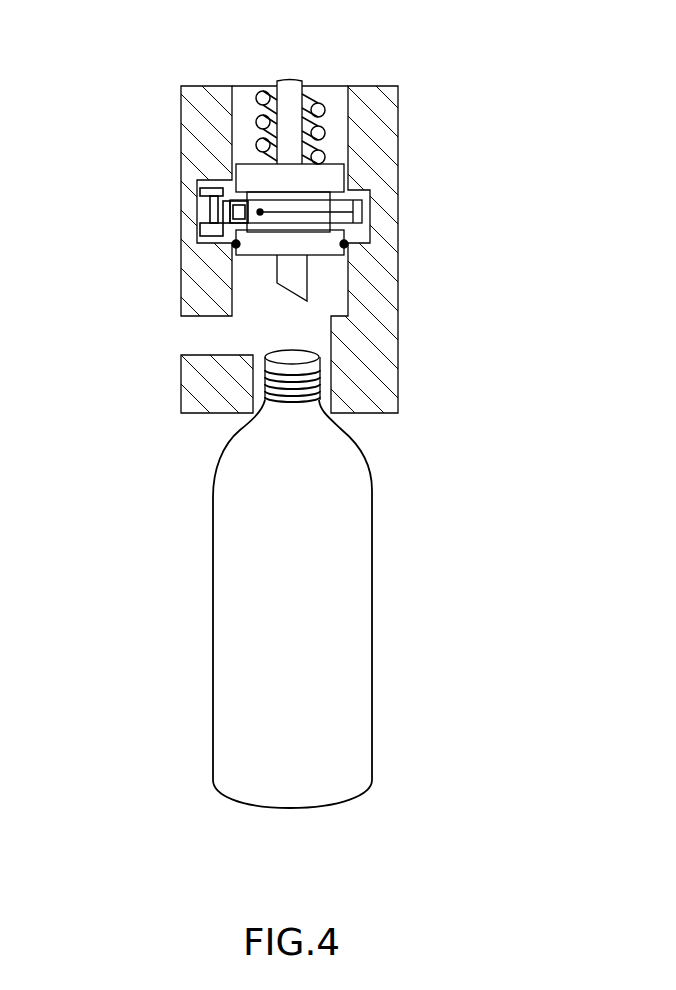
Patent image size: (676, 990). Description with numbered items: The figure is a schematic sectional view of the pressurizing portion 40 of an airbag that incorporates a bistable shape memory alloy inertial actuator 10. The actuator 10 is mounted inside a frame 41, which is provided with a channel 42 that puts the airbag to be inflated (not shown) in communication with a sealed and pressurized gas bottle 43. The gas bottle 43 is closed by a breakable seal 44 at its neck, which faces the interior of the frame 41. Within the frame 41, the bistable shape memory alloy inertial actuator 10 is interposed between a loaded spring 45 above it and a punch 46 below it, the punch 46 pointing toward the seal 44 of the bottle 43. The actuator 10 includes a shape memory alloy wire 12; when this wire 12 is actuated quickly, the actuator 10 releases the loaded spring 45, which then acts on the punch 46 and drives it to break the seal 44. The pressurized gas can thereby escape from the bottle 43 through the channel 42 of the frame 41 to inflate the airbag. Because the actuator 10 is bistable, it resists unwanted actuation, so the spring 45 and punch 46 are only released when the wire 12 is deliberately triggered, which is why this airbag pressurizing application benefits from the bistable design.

The bistable shape memory alloy inertial actuator 10 is at (225, 202).
The shape memory alloy wire 12 is at (353, 213).
The pressurizing portion 40 is at (338, 212).
The frame 41 is at (338, 225).
The channel 42 is at (195, 333).
The gas bottle 43 is at (360, 602).
The breakable seal 44 is at (300, 372).
The loaded spring 45 is at (257, 91).
The punch 46 is at (297, 283).